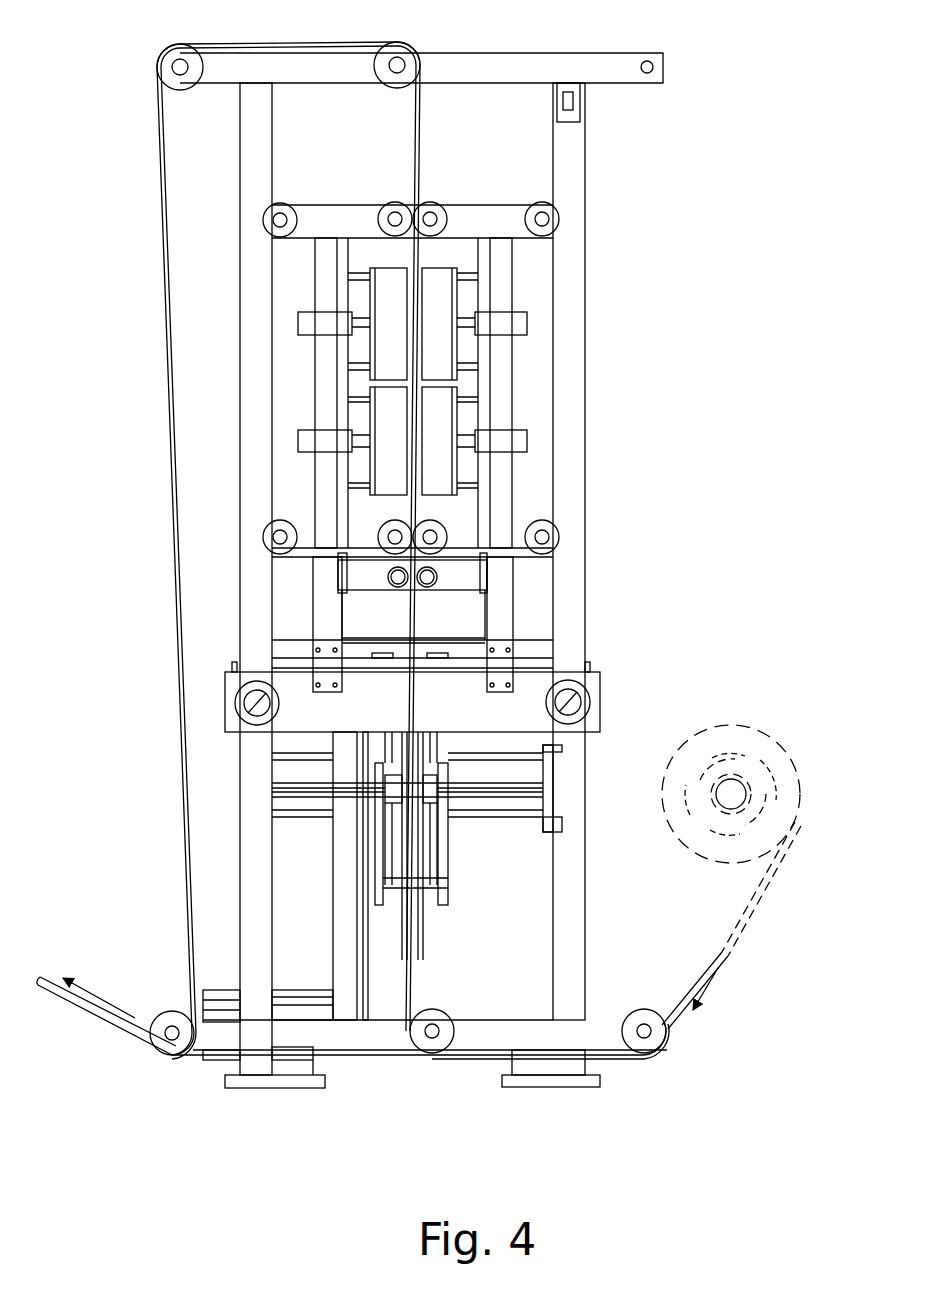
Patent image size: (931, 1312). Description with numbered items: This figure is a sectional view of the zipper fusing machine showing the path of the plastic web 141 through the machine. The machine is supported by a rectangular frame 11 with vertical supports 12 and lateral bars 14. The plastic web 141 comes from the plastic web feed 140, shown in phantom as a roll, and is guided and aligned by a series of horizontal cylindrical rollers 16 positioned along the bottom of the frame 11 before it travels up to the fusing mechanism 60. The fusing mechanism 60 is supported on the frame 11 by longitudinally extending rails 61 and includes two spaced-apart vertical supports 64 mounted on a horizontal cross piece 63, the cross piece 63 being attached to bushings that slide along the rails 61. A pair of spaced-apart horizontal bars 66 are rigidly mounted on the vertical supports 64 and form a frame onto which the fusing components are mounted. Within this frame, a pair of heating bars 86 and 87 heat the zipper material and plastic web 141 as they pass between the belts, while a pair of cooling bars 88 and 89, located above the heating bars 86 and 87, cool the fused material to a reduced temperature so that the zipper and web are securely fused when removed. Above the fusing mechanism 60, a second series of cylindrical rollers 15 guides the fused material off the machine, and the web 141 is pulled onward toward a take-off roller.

The rectangular frame 11 is at (590, 173).
The vertical supports 12 is at (587, 238).
The lateral bars 14 is at (597, 60).
The cylindrical rollers 15 is at (178, 45).
The horizontal cylindrical rollers 16 is at (435, 1055).
The fusing mechanism 60 is at (528, 615).
The rails 61 is at (243, 710).
The horizontal cross piece 63 is at (598, 713).
The vertical supports 64 is at (320, 600).
The horizontal bars 66 is at (518, 233).
The heating bar 86 is at (455, 427).
The heating bar 87 is at (383, 417).
The cooling bar 88 is at (453, 340).
The cooling bar 89 is at (388, 297).
The plastic web feed 140 is at (797, 783).
The plastic web 141 is at (730, 937).